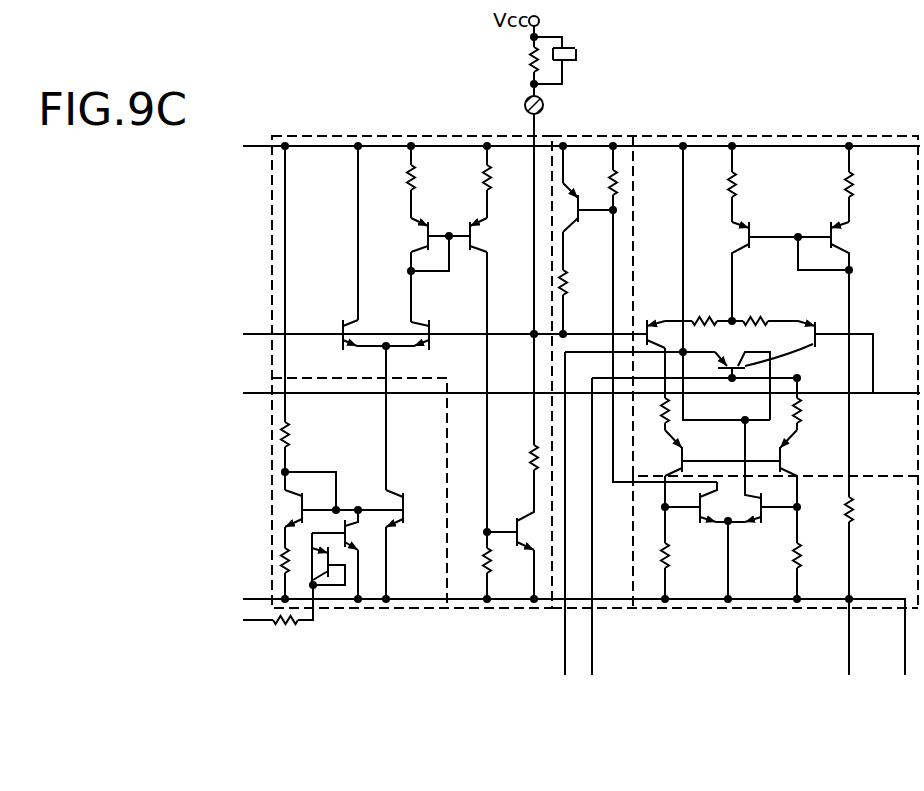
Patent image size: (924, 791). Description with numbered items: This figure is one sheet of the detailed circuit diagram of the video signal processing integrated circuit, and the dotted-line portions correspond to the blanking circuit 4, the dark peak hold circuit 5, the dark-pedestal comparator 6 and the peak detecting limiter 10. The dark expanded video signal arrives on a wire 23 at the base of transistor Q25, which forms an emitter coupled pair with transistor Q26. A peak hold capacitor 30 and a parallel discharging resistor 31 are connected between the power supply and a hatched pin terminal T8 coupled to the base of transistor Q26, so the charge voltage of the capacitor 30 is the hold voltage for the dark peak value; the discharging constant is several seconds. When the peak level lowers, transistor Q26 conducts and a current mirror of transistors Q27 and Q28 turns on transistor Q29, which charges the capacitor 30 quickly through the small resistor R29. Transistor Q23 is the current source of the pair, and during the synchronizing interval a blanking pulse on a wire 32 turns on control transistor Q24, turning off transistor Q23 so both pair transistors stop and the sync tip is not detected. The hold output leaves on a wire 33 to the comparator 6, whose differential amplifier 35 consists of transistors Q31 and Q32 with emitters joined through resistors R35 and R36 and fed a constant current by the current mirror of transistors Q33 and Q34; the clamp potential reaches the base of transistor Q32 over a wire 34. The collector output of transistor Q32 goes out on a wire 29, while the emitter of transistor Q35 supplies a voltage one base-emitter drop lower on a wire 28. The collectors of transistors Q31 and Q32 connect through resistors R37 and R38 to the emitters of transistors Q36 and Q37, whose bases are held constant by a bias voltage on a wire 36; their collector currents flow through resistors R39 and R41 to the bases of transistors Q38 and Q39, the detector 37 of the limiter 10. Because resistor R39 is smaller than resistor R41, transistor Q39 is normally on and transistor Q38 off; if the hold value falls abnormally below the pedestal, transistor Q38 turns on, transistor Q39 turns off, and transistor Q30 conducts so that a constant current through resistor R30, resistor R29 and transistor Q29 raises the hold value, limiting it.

The blanking circuit 4 is at (417, 610).
The dark peak hold circuit 5 is at (359, 136).
The dark-pedestal comparator 6 is at (775, 136).
The peak detecting limiter 10 is at (643, 608).
The wire 23 is at (243, 334).
The wire 28 is at (565, 626).
The wire 29 is at (592, 636).
The peak hold capacitor 30 is at (580, 55).
The discharging resistor 31 is at (528, 66).
The wire 32 is at (262, 623).
The wire 33 is at (511, 335).
The wire 34 is at (243, 393).
The differential amplifier 35 is at (716, 282).
The wire 36 is at (866, 643).
The detector 37 is at (719, 533).
The terminal T8 is at (545, 103).
The transistor Q23 is at (396, 497).
The control transistor Q24 is at (345, 517).
The transistor Q25 is at (343, 319).
The transistor Q26 is at (442, 307).
The transistor Q27 is at (418, 242).
The transistor Q28 is at (474, 238).
The transistor Q29 is at (515, 539).
The transistor Q30 is at (600, 234).
The transistor Q31 is at (651, 318).
The transistor Q32 is at (813, 320).
The transistor Q33 is at (742, 250).
The transistor Q34 is at (845, 245).
The transistor Q35 is at (704, 386).
The transistor Q36 is at (684, 453).
The transistor Q37 is at (787, 457).
The transistor Q38 is at (698, 512).
The transistor Q39 is at (762, 524).
The resistor R29 is at (534, 453).
The resistor R30 is at (567, 283).
The resistor R35 is at (704, 312).
The resistor R36 is at (769, 312).
The resistor R37 is at (665, 418).
The resistor R38 is at (801, 412).
The resistor R39 is at (663, 560).
The resistor R41 is at (797, 562).